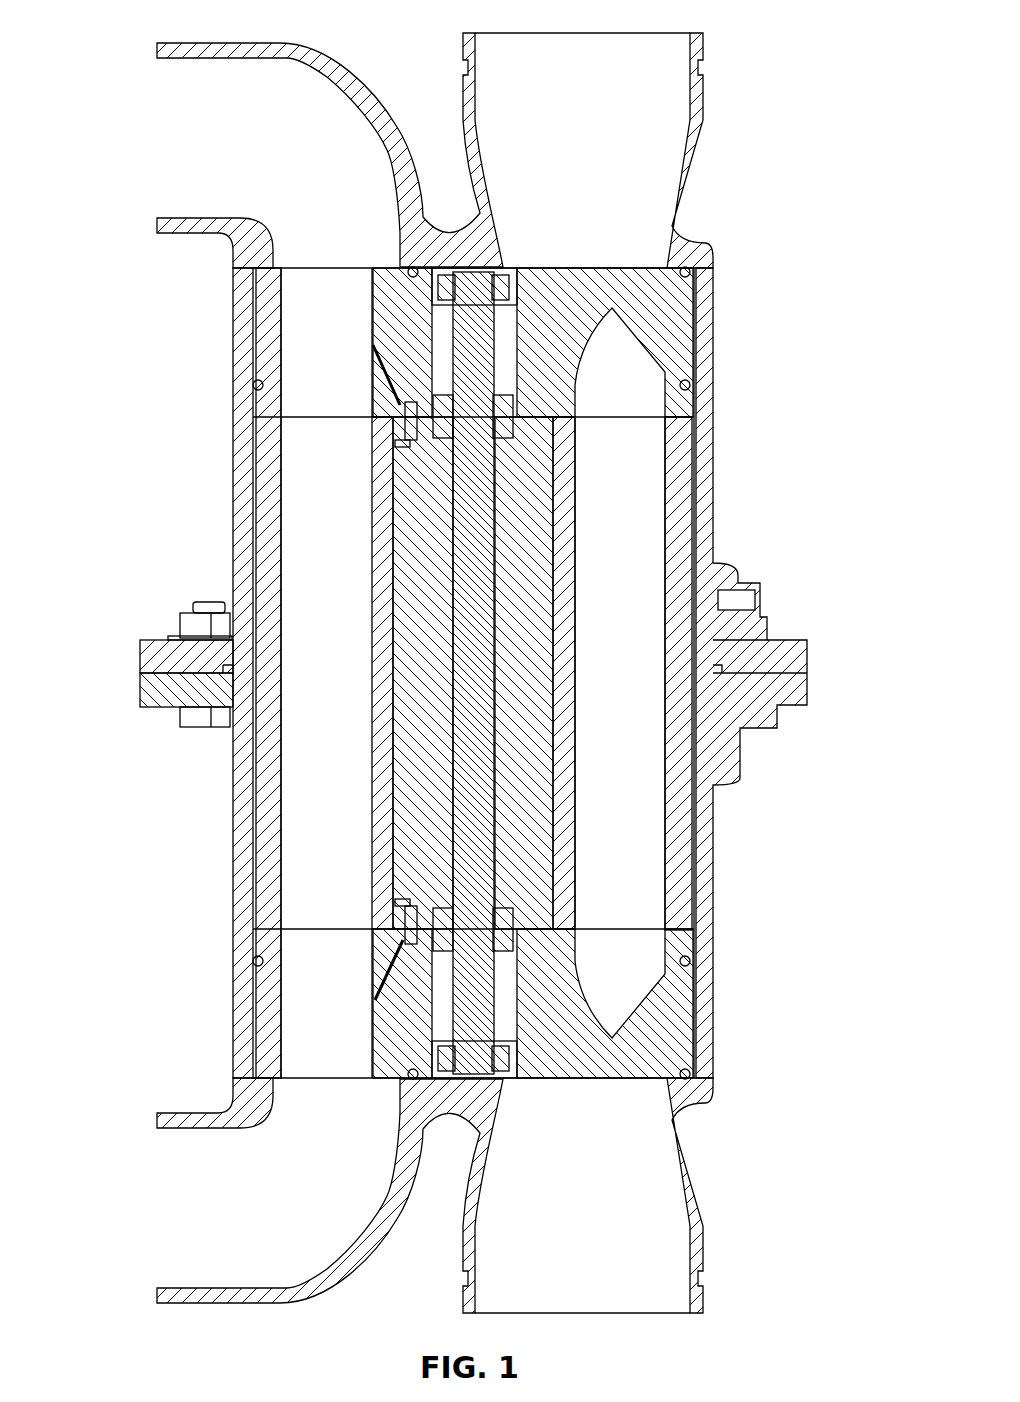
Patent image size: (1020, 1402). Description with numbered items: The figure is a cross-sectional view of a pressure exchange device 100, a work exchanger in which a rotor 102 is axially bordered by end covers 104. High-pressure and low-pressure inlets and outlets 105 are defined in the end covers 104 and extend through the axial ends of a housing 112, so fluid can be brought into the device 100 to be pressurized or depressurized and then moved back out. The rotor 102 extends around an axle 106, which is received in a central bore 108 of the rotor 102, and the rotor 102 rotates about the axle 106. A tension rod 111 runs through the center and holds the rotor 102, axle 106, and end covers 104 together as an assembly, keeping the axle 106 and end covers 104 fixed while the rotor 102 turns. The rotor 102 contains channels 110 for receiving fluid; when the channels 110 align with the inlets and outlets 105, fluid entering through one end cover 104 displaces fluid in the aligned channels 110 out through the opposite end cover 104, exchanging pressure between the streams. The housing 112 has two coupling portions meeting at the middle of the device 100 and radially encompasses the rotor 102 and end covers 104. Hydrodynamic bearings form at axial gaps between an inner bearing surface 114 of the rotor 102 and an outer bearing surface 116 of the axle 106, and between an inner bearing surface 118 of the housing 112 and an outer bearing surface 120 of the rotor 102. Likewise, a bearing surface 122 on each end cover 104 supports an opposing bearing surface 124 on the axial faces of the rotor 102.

The pressure exchange device 100 is at (818, 63).
The rotor 102 is at (693, 450).
The end covers 104 is at (665, 325).
The high-pressure and low-pressure inlets and outlets 105 is at (470, 88).
The axle 106 is at (530, 580).
The central bore 108 is at (385, 605).
The channels 110 is at (343, 530).
The tension rod 111 is at (470, 1043).
The housing 112 is at (687, 230).
The inner bearing surface of the rotor 114 is at (390, 470).
The outer bearing surface of the axle 116 is at (390, 510).
The inner bearing surface of the housing 118 is at (250, 790).
The outer bearing surface of the rotor 120 is at (240, 920).
The bearing surface of the end covers 122 is at (255, 403).
The bearing surface of the rotor 124 is at (337, 413).